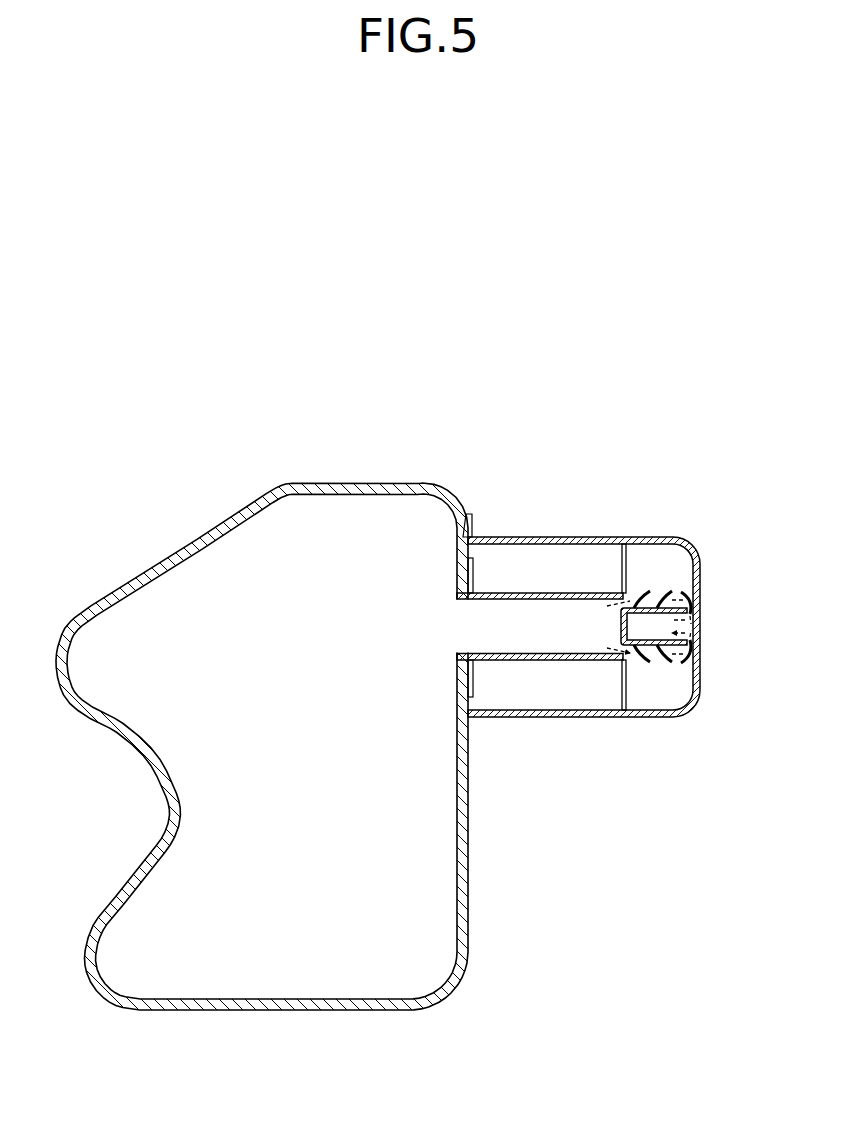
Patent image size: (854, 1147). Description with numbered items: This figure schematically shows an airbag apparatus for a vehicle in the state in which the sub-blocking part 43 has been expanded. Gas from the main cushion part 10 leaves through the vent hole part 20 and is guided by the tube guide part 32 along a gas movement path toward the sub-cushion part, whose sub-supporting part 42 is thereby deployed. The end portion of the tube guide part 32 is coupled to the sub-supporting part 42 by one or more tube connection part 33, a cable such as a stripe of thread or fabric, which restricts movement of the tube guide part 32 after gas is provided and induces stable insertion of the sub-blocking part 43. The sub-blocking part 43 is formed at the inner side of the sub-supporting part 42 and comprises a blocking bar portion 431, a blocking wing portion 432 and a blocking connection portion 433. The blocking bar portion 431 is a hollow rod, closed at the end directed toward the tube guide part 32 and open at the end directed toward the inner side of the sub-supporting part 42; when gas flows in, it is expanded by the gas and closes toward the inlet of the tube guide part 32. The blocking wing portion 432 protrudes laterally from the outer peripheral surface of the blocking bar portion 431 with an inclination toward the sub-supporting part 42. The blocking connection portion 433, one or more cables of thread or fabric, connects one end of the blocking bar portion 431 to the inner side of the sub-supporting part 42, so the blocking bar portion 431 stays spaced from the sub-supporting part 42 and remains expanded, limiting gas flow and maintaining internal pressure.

The main cushion part 10 is at (252, 1005).
The vent hole part 20 is at (458, 630).
The tube guide part 32 is at (547, 591).
The tube connection part 33 is at (625, 570).
The sub-supporting part 42 is at (603, 540).
The sub-blocking part 43 is at (681, 738).
The blocking bar portion 431 is at (644, 661).
The blocking wing portion 432 is at (662, 661).
The blocking connection portion 433 is at (686, 678).